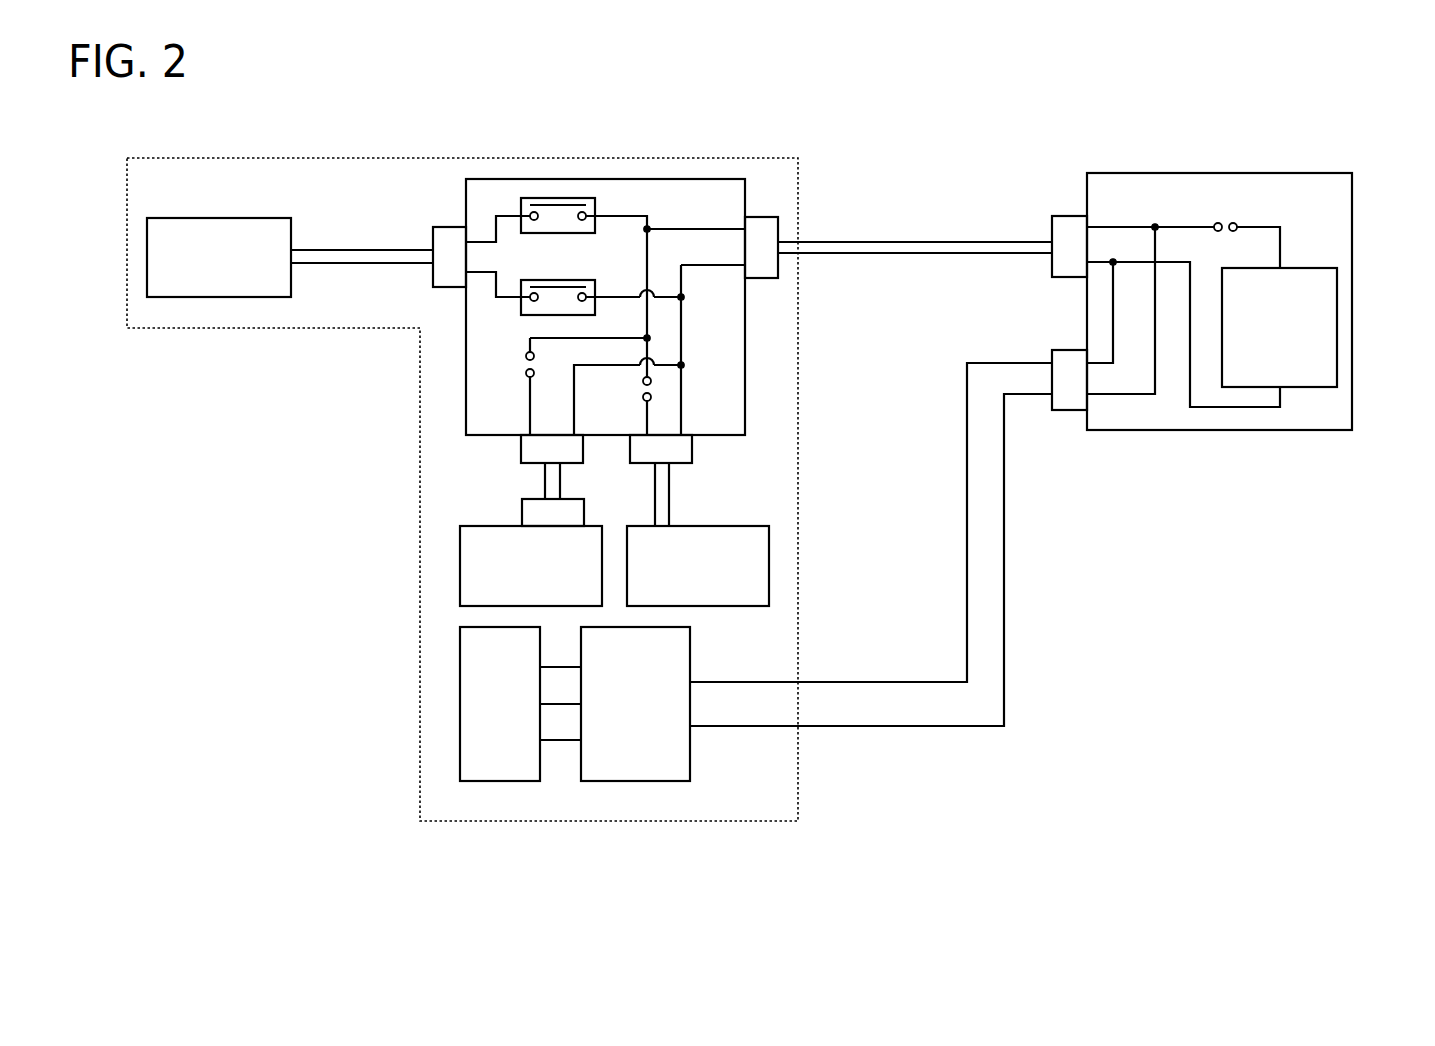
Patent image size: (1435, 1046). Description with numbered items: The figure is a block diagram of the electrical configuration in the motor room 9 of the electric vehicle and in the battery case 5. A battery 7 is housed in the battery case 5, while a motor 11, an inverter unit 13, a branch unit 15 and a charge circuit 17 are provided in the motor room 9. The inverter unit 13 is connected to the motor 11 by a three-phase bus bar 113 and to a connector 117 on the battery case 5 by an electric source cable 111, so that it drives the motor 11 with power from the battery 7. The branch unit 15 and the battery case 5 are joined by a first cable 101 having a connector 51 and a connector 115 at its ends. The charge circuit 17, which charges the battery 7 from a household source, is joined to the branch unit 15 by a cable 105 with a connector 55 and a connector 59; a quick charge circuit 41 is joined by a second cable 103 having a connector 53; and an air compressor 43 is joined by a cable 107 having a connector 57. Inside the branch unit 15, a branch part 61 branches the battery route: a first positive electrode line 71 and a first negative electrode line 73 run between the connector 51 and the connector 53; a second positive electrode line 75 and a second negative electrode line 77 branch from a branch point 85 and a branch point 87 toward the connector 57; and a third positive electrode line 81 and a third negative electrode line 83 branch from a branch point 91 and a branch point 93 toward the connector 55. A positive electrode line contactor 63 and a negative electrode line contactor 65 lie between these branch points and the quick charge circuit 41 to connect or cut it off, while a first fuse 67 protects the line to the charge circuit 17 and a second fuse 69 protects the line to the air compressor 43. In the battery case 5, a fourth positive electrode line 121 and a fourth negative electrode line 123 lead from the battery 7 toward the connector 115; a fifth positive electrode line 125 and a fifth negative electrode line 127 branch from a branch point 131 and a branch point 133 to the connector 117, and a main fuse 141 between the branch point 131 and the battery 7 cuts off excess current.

The battery case 5 is at (1333, 173).
The battery 7 is at (1337, 330).
The motor room 9 is at (292, 158).
The motor 11 is at (500, 781).
The inverter unit 13 is at (645, 781).
The branch unit 15 is at (505, 179).
The charge circuit 17 is at (460, 563).
The quick charge circuit 41 is at (185, 218).
The air compressor 43 is at (769, 563).
The connector 51 is at (765, 217).
The connector 53 is at (450, 227).
The connector 55 is at (528, 445).
The connector 57 is at (692, 447).
The connector 59 is at (535, 512).
The branch part 61 is at (714, 222).
The positive electrode line contactor 63 is at (580, 198).
The negative electrode line contactor 65 is at (520, 312).
The first fuse 67 is at (528, 378).
The second fuse 69 is at (653, 390).
The first positive electrode line 71 is at (694, 228).
The first negative electrode line 73 is at (717, 267).
The second positive electrode line 75 is at (646, 260).
The second negative electrode line 77 is at (683, 340).
The third positive electrode line 81 is at (573, 400).
The third negative electrode line 83 is at (528, 418).
The branch point 85 is at (647, 228).
The branch point 87 is at (688, 300).
The branch point 91 is at (640, 338).
The branch point 93 is at (683, 367).
The first cable 101 is at (912, 247).
The second cable 103 is at (352, 250).
The cable 105 is at (552, 483).
The cable 107 is at (664, 500).
The electric source cable 111 is at (967, 565).
The three-phase bus bar 113 is at (572, 670).
The connector 115 is at (1065, 216).
The connector 117 is at (1068, 410).
The fourth positive electrode line 121 is at (1280, 245).
The fourth negative electrode line 123 is at (1280, 395).
The fifth positive electrode line 125 is at (1155, 250).
The fifth negative electrode line 127 is at (1113, 318).
The branch point 131 is at (1155, 227).
The branch point 133 is at (1113, 270).
The main fuse 141 is at (1220, 225).